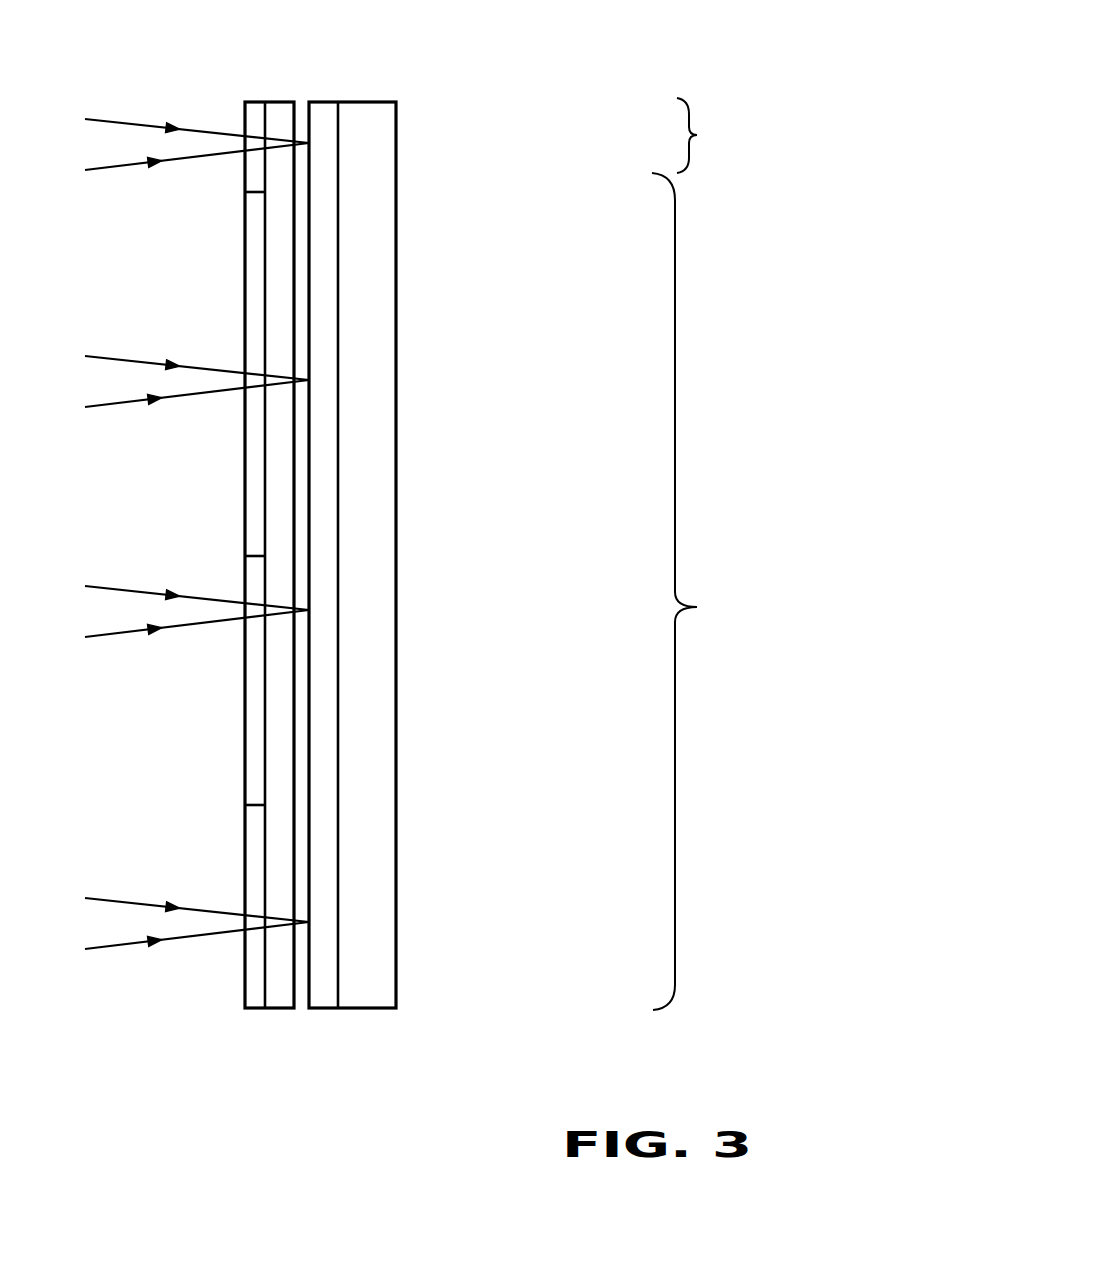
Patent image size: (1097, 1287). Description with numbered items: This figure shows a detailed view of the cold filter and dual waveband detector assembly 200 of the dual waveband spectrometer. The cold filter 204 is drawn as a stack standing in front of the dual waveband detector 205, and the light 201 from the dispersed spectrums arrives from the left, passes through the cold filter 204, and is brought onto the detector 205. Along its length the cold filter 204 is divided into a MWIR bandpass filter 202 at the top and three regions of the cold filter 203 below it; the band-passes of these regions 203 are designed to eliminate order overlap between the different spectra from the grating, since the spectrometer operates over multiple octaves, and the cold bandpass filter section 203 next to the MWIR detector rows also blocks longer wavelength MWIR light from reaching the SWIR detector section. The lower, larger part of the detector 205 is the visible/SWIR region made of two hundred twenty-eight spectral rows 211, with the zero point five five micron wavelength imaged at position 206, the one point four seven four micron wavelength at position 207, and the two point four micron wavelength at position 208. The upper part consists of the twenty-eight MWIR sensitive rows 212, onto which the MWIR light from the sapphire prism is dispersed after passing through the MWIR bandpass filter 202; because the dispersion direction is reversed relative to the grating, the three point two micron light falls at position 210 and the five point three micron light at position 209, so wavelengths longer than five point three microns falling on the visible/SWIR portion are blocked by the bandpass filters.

The optical detector system 200 is at (642, 48).
The light 201 is at (130, 121).
The MWIR bandpass filter 202 is at (240, 173).
The regions of the cold filter 203 is at (243, 475).
The cold filter 204 is at (280, 1008).
The dual waveband detector 205 is at (380, 1008).
The 0.55 micron wavelength position 206 is at (431, 1002).
The 1.474 micron wavelength position 207 is at (436, 525).
The 2.4 micron wavelength position 208 is at (423, 209).
The 5.3 micron light position 209 is at (420, 160).
The 3.2 micron light position 210 is at (420, 102).
The spectral rows 211 is at (716, 591).
The MWIR sensitive rows 212 is at (730, 135).